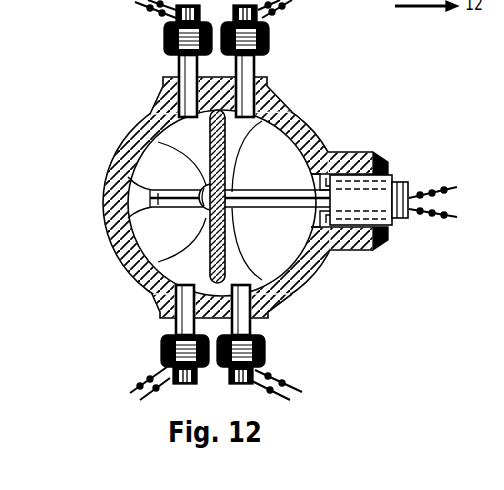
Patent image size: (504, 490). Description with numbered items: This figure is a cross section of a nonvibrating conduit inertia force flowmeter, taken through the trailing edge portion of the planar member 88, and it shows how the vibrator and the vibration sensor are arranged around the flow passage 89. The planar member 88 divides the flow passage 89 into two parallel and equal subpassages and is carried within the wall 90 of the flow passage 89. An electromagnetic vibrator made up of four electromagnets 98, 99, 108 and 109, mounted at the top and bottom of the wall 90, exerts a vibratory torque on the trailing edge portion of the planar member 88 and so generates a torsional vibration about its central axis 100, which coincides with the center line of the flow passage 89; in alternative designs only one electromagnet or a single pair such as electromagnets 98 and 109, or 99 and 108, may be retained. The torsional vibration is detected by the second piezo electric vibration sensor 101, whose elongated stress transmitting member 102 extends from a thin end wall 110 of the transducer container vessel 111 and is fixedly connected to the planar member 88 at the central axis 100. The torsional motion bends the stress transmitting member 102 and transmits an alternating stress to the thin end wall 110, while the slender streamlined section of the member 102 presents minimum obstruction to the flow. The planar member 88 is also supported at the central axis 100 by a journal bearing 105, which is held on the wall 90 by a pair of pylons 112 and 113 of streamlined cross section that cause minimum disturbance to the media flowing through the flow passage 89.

The planar member 88 is at (120, 137).
The flow passage 89 is at (177, 251).
The wall of the flow passage 90 is at (168, 131).
The electromagnet 98 is at (166, 40).
The electromagnet 99 is at (164, 346).
The central axis 100 is at (286, 119).
The second piezo electric vibration sensor 101 is at (400, 228).
The elongated stress transmitting member 102 is at (264, 240).
The journal bearing 105 is at (128, 158).
The electromagnet 108 is at (269, 40).
The electromagnet 109 is at (262, 349).
The thin end wall 110 is at (283, 236).
The transducer container vessel 111 is at (357, 192).
The pylon 112 is at (112, 234).
The pylon 113 is at (303, 151).